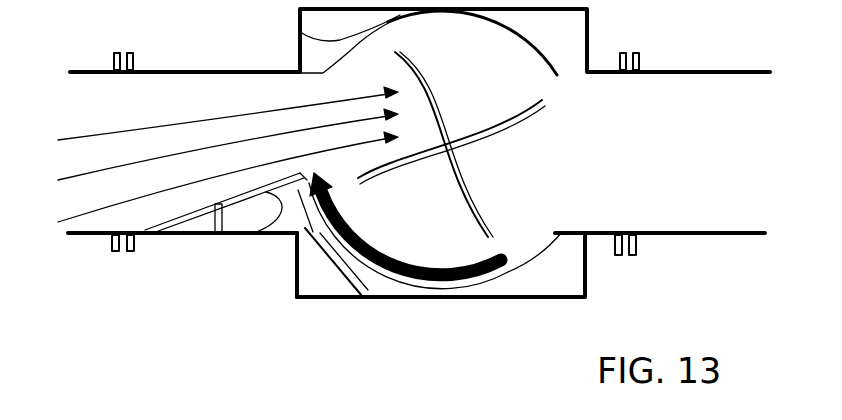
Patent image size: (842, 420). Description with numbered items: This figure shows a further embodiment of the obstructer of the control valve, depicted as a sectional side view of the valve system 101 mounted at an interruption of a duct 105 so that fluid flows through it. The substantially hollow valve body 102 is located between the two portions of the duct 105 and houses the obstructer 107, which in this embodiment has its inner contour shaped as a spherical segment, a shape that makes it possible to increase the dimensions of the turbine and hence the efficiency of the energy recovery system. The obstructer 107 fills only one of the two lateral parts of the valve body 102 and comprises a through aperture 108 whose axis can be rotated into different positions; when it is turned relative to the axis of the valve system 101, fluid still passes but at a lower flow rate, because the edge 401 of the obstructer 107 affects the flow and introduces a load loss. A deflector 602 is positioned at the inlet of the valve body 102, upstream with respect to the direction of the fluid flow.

The valve system 101 is at (606, 26).
The valve body 102 is at (300, 9).
The duct 105 is at (115, 245).
The obstructer 107 is at (452, 272).
The through aperture 108 is at (570, 209).
The edge 401 is at (350, 282).
The deflector 602 is at (237, 237).